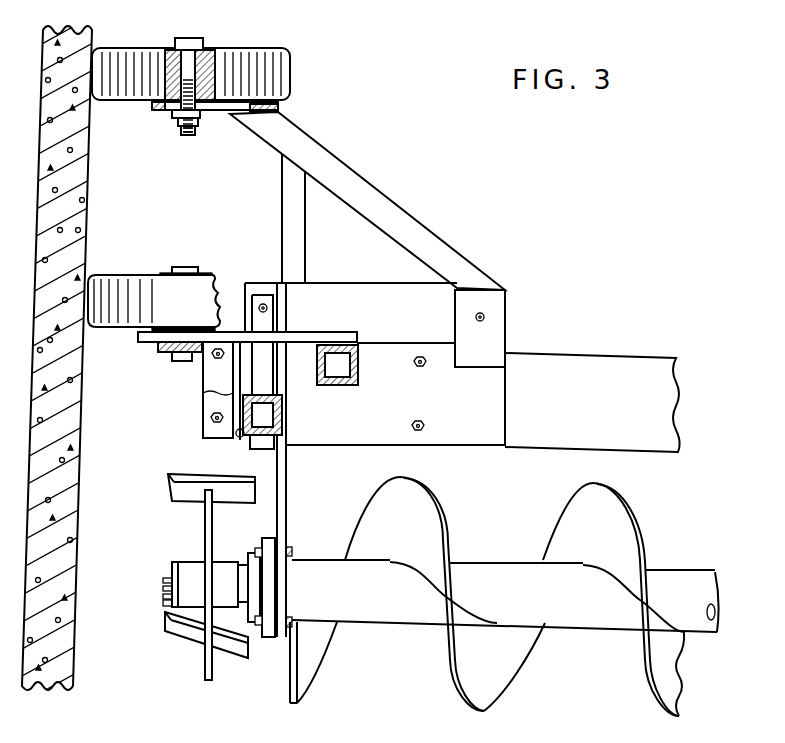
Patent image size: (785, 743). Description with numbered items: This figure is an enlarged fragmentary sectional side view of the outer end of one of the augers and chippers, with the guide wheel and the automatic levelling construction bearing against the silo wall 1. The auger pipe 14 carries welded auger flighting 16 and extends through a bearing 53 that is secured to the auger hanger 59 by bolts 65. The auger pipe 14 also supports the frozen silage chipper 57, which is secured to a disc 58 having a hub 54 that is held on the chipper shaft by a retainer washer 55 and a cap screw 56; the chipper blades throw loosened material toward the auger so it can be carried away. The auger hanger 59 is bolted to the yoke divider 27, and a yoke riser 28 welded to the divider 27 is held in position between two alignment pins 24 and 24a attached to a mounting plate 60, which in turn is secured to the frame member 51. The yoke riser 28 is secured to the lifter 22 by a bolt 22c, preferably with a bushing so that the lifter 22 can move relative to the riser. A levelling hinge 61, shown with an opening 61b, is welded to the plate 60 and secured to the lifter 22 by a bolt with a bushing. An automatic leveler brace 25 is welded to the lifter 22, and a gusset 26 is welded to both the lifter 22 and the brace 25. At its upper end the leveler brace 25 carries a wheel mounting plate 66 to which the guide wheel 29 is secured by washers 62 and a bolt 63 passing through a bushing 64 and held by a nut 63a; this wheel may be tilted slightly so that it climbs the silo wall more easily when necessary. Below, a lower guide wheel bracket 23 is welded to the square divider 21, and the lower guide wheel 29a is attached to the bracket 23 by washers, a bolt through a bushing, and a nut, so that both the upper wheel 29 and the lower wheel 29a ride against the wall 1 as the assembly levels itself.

The wall 1 is at (73, 683).
The auger pipe 14 is at (688, 572).
The auger flighting 16 is at (632, 512).
The square divider 21 is at (358, 366).
The lifter 22 is at (347, 283).
The bolt 22c is at (268, 308).
The lower guide wheel bracket 23 is at (145, 343).
The alignment pin 24 is at (203, 396).
The alignment pin 24a is at (283, 403).
The automatic leveler brace 25 is at (403, 210).
The gusset 26 is at (282, 208).
The yoke divider 27 is at (248, 445).
The yoke riser 28 is at (262, 290).
The guide wheel 29 is at (292, 78).
The lower guide wheel 29a is at (128, 274).
The frame member 51 is at (612, 353).
The bearing 53 is at (268, 637).
The hub 54 is at (196, 562).
The retainer washer 55 is at (172, 572).
The cap screw 56 is at (163, 590).
The frozen silage chipper 57 is at (168, 478).
The disc 58 is at (205, 525).
The auger hanger 59 is at (287, 478).
The mounting plate 60 is at (455, 448).
The levelling hinge 61 is at (507, 328).
The bracket hole 61b is at (485, 315).
The washer 62 is at (219, 51).
The bolt 63 is at (197, 44).
The nut 63a is at (200, 117).
The bushing 64 is at (172, 53).
The bolt 65 is at (259, 548).
The wheel mounting plate 66 is at (280, 110).